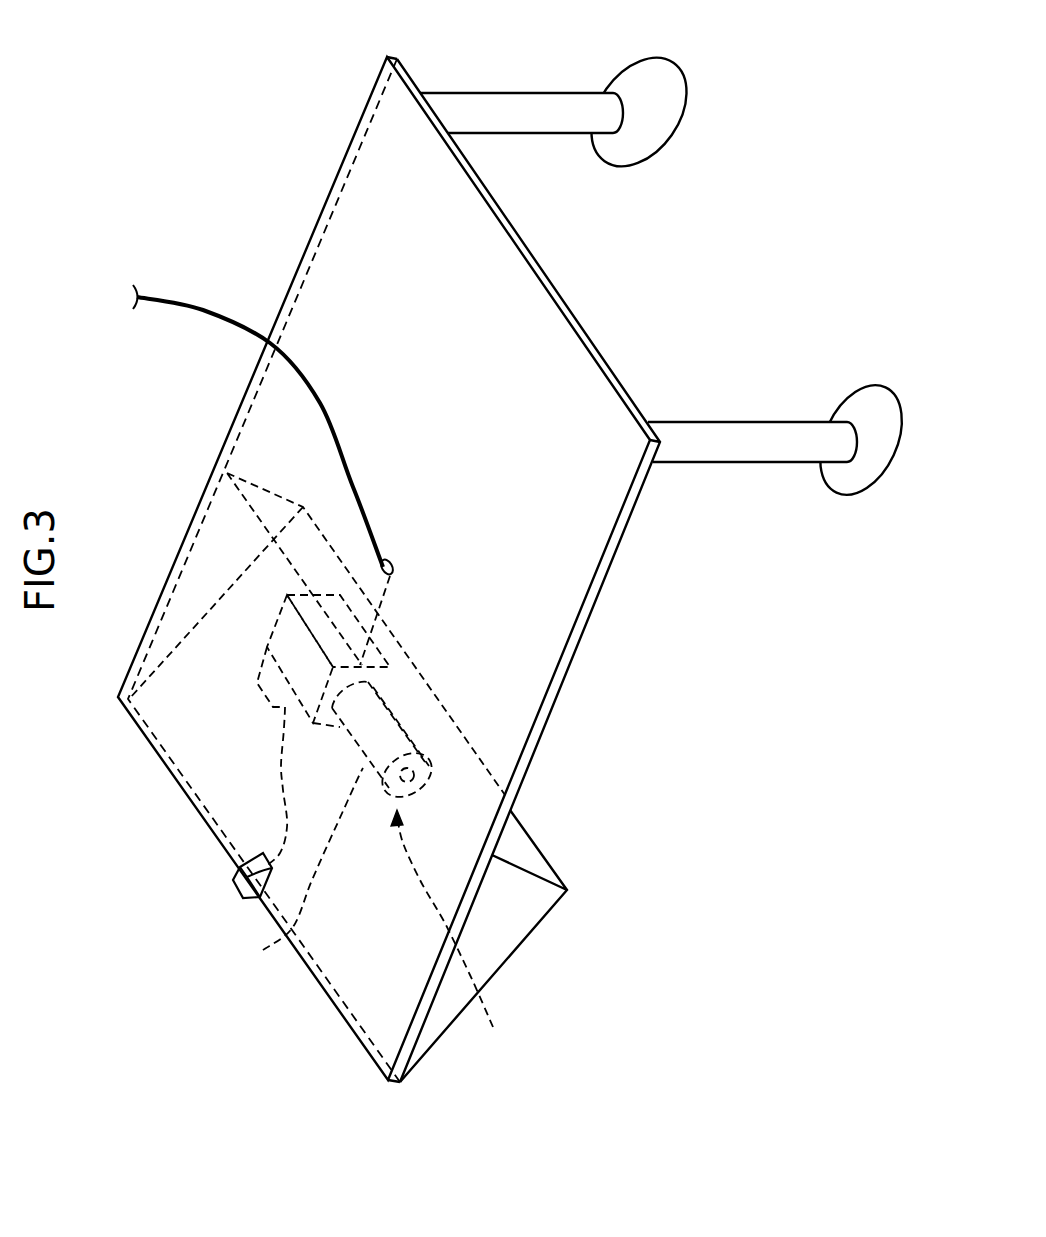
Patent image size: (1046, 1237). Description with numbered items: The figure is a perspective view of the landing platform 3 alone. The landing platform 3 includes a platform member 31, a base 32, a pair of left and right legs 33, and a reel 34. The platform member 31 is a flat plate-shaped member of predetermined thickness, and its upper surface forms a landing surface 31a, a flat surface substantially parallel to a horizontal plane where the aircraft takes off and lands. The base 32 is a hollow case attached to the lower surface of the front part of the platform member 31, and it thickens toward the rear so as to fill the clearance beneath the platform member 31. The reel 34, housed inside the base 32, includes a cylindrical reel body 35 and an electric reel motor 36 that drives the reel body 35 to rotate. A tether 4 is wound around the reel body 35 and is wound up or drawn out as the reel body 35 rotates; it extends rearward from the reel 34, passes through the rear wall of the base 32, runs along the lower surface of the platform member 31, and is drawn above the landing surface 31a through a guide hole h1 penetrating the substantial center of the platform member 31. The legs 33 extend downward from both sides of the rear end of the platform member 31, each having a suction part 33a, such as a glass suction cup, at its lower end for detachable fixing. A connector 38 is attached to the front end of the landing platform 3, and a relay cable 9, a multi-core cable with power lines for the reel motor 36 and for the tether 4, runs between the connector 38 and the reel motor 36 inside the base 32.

The landing platform 3 is at (268, 1026).
The tether 4 is at (170, 296).
The relay cable 9 is at (280, 767).
The platform member 31 is at (230, 423).
The landing surface 31a is at (520, 660).
The base 32 is at (513, 930).
The legs 33 is at (512, 100).
The suction part 33a is at (630, 148).
The reel 34 is at (450, 939).
The reel body 35 is at (299, 870).
The reel motor 36 is at (266, 646).
The connector 38 is at (240, 882).
The guide hole h1 is at (388, 560).